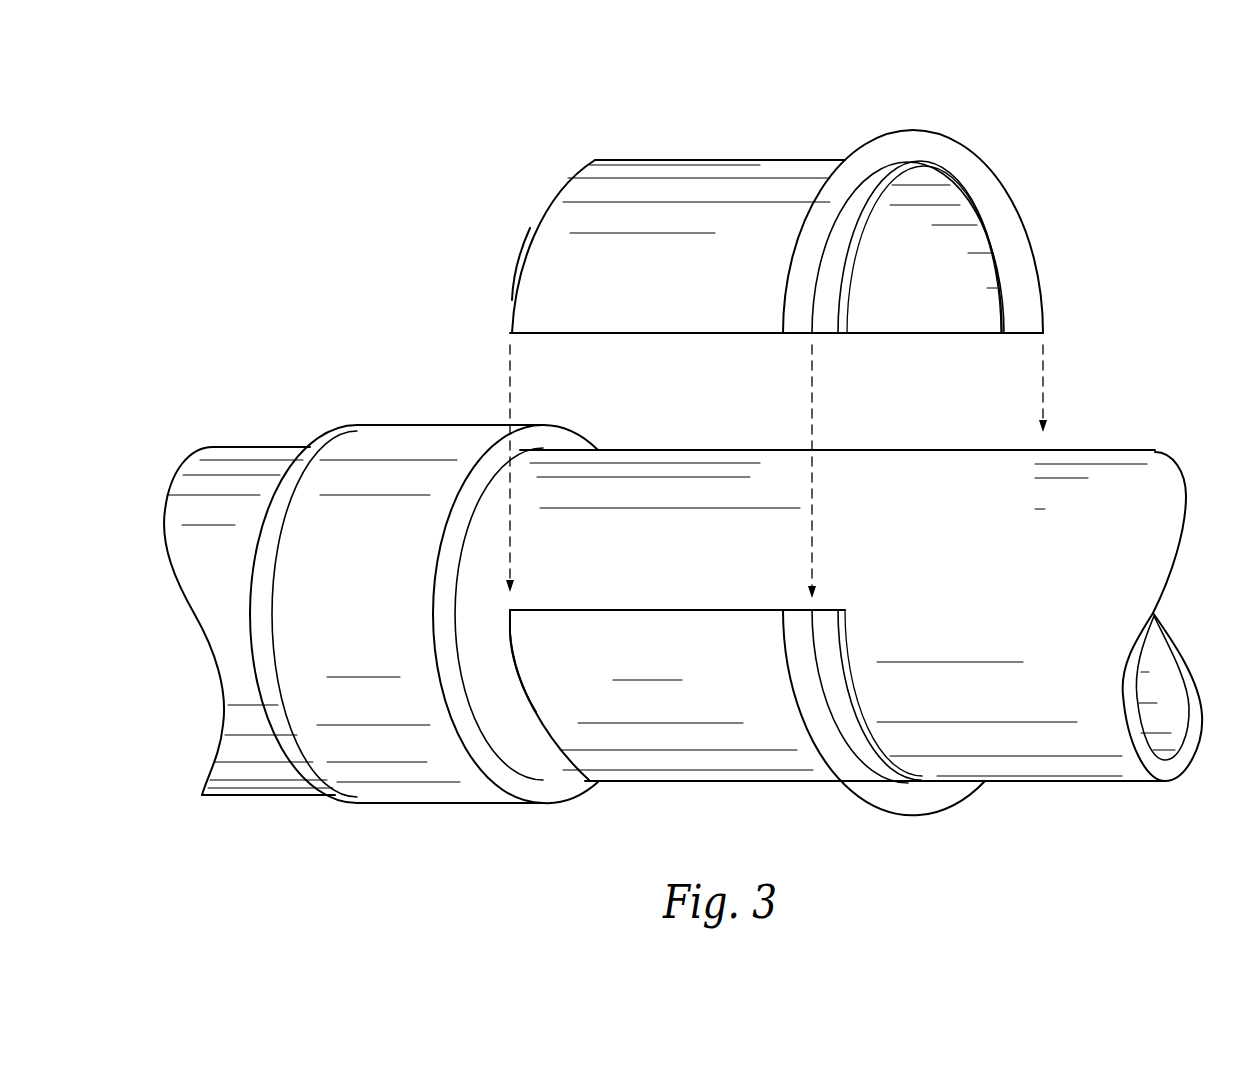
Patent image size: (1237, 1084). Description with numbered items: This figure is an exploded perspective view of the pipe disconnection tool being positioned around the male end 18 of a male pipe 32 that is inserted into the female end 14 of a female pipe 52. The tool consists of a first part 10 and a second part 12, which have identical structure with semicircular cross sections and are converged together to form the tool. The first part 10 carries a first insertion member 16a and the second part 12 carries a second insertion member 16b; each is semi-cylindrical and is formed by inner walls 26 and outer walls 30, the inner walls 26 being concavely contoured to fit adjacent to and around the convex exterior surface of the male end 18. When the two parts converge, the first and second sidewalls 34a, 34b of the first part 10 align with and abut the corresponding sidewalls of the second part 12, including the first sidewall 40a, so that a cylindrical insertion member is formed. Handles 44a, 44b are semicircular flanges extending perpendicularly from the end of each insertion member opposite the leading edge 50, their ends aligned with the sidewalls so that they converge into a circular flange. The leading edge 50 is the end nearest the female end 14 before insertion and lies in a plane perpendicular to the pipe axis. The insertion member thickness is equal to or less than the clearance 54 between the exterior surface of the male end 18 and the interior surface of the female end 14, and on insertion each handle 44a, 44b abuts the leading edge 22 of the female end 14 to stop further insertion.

The first part 10 is at (550, 161).
The second part 12 is at (590, 801).
The female end 14 is at (368, 615).
The first insertion member 16a is at (532, 270).
The second insertion member 16b is at (540, 668).
The male end 18 is at (491, 590).
The leading edge of the female end 22 is at (557, 426).
The inner walls 26 is at (923, 297).
The outer walls 30 is at (690, 284).
The male pipe 32 is at (1142, 422).
The first sidewall of the first part 34a is at (633, 335).
The second sidewall of the first part 34b is at (920, 335).
The first sidewall of the second part 40a is at (675, 608).
The first handle 44a is at (963, 150).
The second handle 44b is at (948, 796).
The leading edge of the insertion member 50 is at (528, 225).
The female pipe 52 is at (250, 419).
The clearance 54 is at (571, 444).